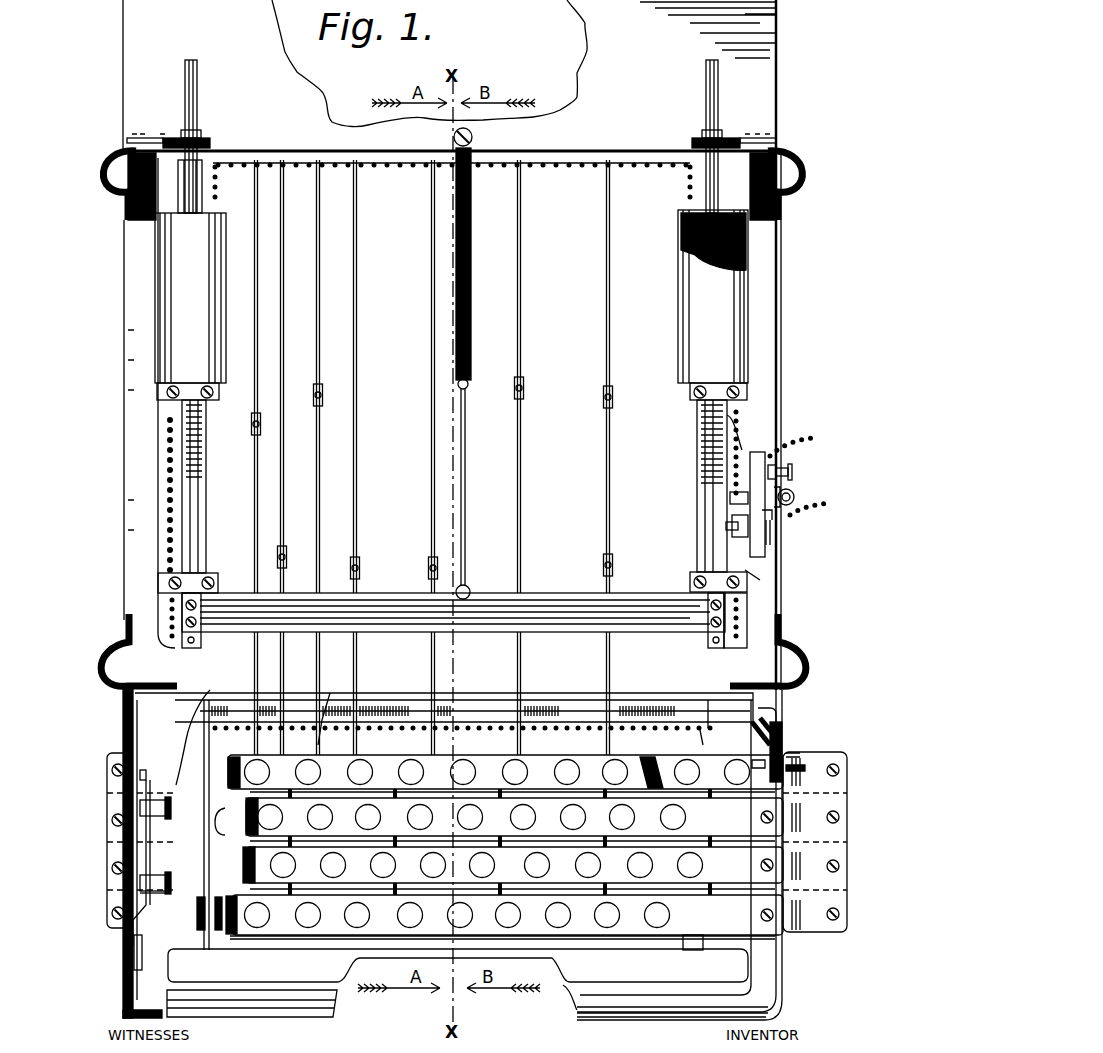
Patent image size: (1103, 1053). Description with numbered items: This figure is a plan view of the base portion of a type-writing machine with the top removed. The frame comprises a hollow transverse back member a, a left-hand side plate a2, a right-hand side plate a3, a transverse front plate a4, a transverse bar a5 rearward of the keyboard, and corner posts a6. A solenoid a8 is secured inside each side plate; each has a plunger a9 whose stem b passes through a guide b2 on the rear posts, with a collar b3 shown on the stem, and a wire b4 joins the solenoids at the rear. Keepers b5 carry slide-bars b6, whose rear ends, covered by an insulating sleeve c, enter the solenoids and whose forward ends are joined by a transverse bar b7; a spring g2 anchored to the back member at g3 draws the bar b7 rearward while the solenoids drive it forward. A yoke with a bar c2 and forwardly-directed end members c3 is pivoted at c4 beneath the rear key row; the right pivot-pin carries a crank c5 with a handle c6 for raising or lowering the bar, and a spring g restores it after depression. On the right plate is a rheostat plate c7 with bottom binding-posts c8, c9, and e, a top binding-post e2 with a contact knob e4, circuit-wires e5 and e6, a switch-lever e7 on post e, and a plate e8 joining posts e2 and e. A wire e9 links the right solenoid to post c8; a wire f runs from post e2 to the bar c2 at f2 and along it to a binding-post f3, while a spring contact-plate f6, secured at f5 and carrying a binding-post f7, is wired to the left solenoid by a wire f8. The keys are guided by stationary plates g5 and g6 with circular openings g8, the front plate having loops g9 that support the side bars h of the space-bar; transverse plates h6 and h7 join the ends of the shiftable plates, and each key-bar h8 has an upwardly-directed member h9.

The hollow transverse back member a is at (451, 75).
The left-hand side plate a2 is at (124, 458).
The right-hand side plate a3 is at (780, 312).
The transverse front plate a4 is at (296, 1000).
The transverse bar a5 is at (452, 589).
The vertical side or corner posts a6 is at (112, 178).
The solenoid a8 is at (178, 280).
The longitudinally-movable plunger a9 is at (188, 188).
The stem b is at (198, 96).
The support or guide b2 is at (160, 138).
The collars b3 is at (188, 135).
The wire b4 is at (560, 172).
The guides or keepers b5 is at (212, 580).
The slide-bars b6 is at (200, 518).
The transverse bar b7 is at (545, 600).
The insulating sleeve or covering c is at (204, 440).
The bar c2 is at (565, 708).
The forwardly-directed end members c3 is at (133, 732).
The pivot c4 is at (110, 760).
The crank c5 is at (795, 769).
The handle c6 is at (812, 758).
The plate c7 is at (755, 455).
The binding-post c8 is at (792, 472).
The binding-post c9 is at (794, 503).
The binding-post e is at (730, 540).
The central binding-post e2 is at (728, 496).
The contact knob or button e4 is at (792, 493).
The circuit-wire e5 is at (815, 440).
The circuit-wire e6 is at (830, 505).
The switch-lever e7 is at (775, 520).
The plate e8 is at (726, 527).
The wire e9 is at (740, 418).
The wire f is at (205, 700).
The connection point f2 is at (714, 726).
The binding-post f3 is at (165, 814).
The securing point f5 is at (130, 948).
The spring contact-plate f6 is at (140, 855).
The binding-post f7 is at (138, 894).
The wire f8 is at (165, 500).
The spring g is at (783, 758).
The spring g2 is at (471, 322).
The securing point g3 is at (473, 137).
The top plate g5 is at (546, 768).
The plate g6 is at (275, 788).
The circular openings g8 is at (372, 772).
The downwardly-directed loops g9 is at (197, 920).
The side bars h is at (203, 950).
The transverse plate h6 is at (140, 806).
The transverse plate h7 is at (833, 925).
The key-bars h8 is at (284, 345).
The upwardly-directed member h9 is at (655, 750).